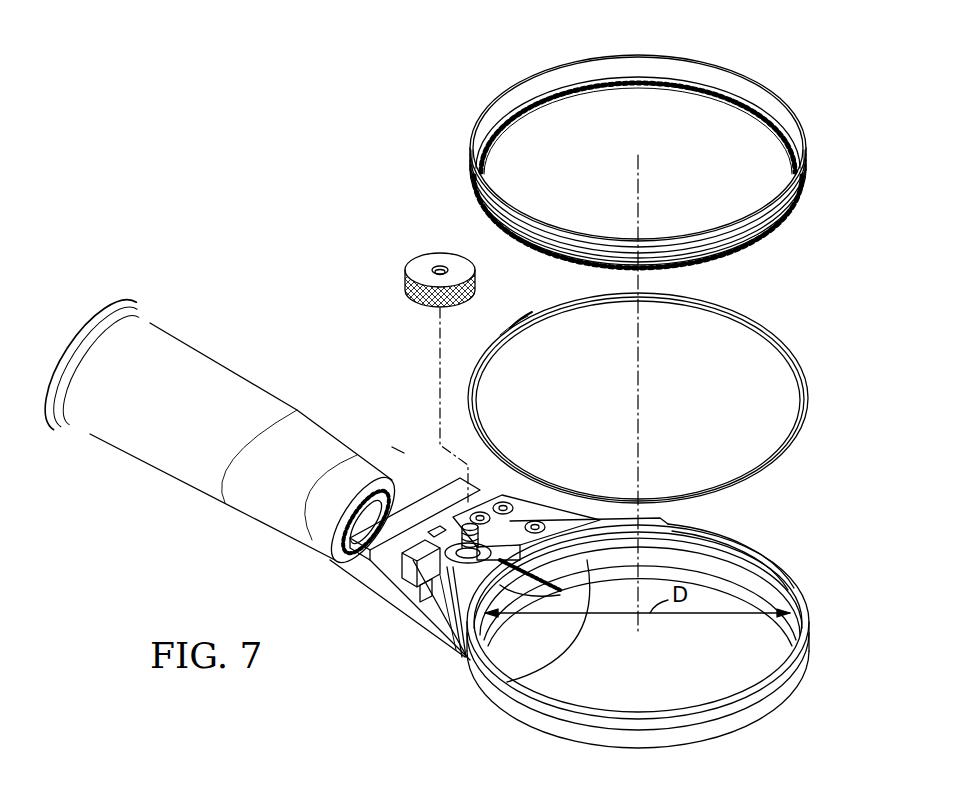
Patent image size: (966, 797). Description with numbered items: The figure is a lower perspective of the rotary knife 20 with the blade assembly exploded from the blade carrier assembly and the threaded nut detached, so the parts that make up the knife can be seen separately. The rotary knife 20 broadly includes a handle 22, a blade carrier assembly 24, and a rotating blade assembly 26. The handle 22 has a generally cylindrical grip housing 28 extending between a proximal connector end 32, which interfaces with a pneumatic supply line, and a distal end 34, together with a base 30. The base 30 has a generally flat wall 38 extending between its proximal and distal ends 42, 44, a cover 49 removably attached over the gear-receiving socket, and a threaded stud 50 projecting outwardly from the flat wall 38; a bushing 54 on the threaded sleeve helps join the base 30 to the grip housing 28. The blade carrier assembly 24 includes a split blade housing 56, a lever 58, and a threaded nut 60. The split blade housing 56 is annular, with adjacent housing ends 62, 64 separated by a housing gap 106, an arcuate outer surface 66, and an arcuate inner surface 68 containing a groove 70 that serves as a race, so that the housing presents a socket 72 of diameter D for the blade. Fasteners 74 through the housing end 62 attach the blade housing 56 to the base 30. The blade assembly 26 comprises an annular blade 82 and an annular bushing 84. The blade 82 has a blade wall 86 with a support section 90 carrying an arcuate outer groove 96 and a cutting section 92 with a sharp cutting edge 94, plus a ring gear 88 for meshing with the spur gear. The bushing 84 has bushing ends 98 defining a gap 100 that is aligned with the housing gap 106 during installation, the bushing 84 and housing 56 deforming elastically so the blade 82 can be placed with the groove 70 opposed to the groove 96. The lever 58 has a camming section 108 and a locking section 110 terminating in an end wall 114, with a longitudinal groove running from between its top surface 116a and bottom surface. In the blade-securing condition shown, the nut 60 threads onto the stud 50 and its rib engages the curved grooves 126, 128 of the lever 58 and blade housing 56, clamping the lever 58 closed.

The rotary knife 20 is at (882, 84).
The handle 22 is at (163, 445).
The blade carrier assembly 24 is at (800, 676).
The rotating blade assembly 26 is at (430, 90).
The grip housing 28 is at (82, 356).
The base 30 is at (413, 612).
The proximal connector end 32 is at (114, 258).
The distal end 34 is at (393, 428).
The flat wall 38 is at (336, 538).
The proximal end 42 is at (248, 546).
The distal end 44 is at (455, 690).
The cover 49 is at (555, 652).
The threaded stud 50 is at (460, 500).
The bushing 54 is at (313, 530).
The split blade housing 56 is at (811, 652).
The lever 58 is at (395, 612).
The threaded nut 60 is at (420, 266).
The housing end 62 is at (530, 520).
The housing end 64 is at (447, 614).
The arcuate outer surface 66 is at (776, 702).
The arcuate inner surface 68 is at (800, 562).
The groove 70 is at (640, 606).
The socket 72 is at (756, 552).
The fasteners 74 is at (505, 505).
The annular blade 82 is at (808, 197).
The annular bushing 84 is at (802, 356).
The blade wall 86 is at (756, 104).
The ring gear 88 is at (738, 106).
The support section 90 is at (720, 96).
The cutting section 92 is at (780, 113).
The sharp cutting edge 94 is at (800, 132).
The arcuate outer groove 96 is at (790, 220).
The bushing ends 98 is at (522, 330).
The gap 100 is at (515, 318).
The housing gap 106 is at (562, 592).
The camming section 108 is at (487, 504).
The locking section 110 is at (407, 567).
The end wall 114 is at (425, 590).
The top surface 116a is at (430, 538).
The curved groove 126 is at (392, 448).
The curved groove 128 is at (452, 650).